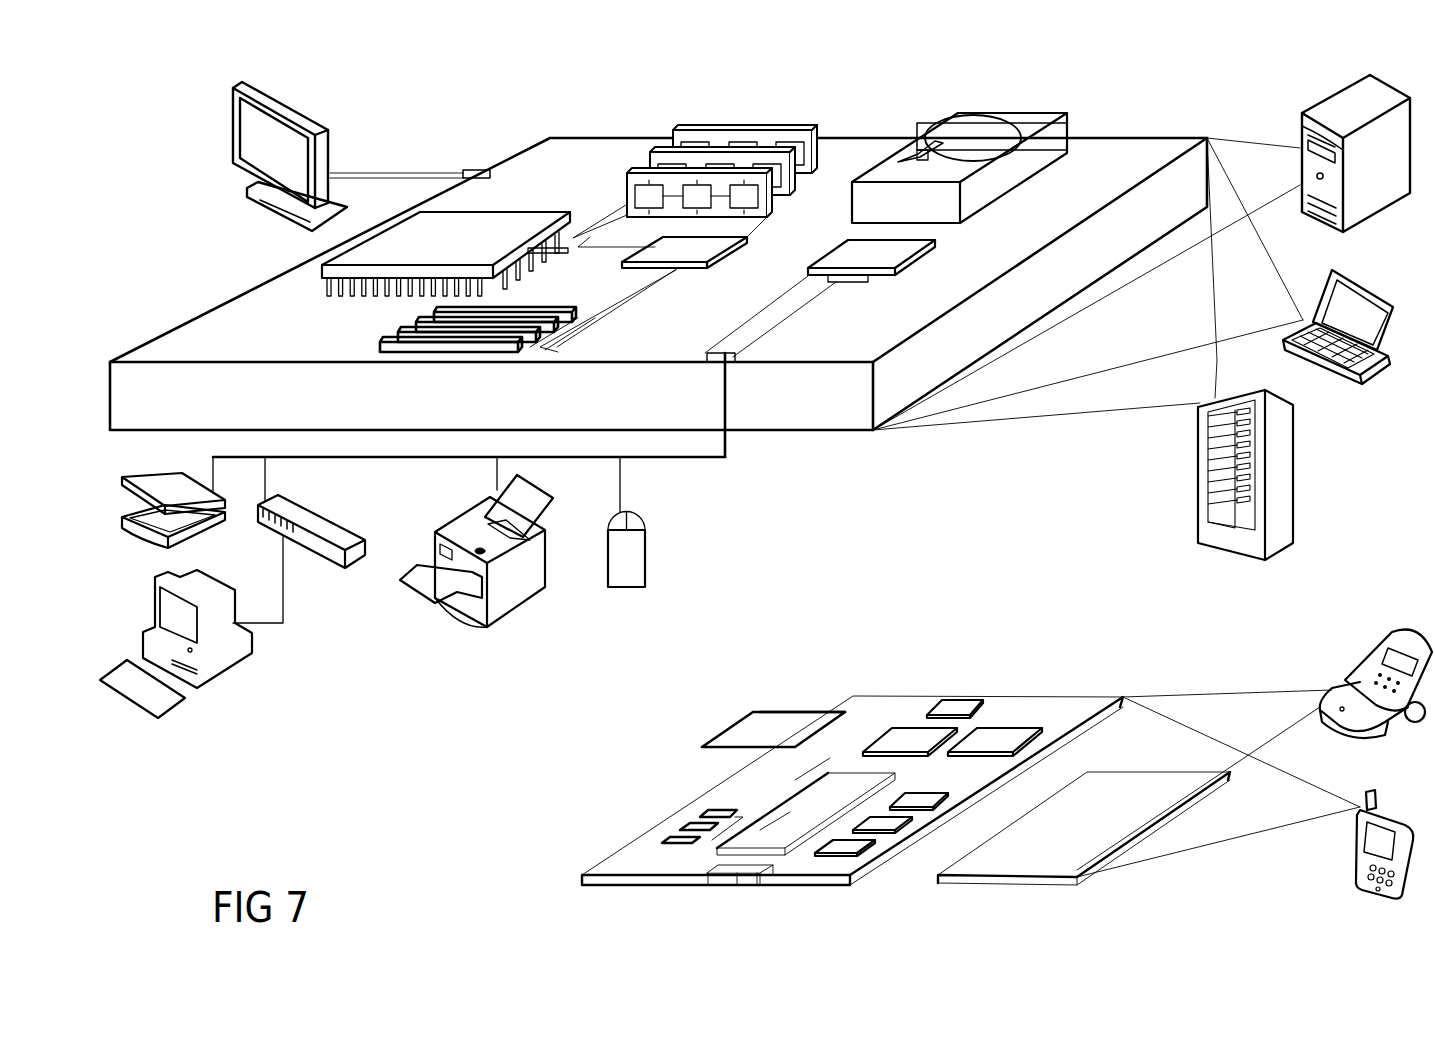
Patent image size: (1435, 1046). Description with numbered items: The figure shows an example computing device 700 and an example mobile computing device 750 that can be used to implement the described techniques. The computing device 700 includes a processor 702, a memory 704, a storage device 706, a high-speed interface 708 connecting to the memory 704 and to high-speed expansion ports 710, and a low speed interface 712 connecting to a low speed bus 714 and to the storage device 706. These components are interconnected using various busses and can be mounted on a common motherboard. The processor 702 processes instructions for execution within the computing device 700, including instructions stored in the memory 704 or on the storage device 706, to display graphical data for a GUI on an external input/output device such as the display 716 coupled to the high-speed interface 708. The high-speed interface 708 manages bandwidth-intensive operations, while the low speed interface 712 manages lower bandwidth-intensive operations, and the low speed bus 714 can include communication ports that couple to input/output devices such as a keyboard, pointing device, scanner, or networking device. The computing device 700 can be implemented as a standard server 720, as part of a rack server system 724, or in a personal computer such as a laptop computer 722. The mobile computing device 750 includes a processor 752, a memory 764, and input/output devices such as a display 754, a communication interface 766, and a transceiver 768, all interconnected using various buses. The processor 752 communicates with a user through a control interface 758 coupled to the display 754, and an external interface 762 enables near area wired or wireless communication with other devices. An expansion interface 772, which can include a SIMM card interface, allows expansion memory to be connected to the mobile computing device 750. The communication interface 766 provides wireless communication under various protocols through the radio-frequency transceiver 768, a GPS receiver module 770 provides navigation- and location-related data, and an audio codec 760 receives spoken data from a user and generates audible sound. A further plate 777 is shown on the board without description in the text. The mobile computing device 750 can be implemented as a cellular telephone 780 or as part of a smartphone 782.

The computing device 700 is at (461, 103).
The processor 702 is at (322, 273).
The memory 704 is at (693, 128).
The storage device 706 is at (950, 113).
The high-speed interface 708 is at (657, 250).
The high-speed expansion ports 710 is at (397, 323).
The low speed interface 712 is at (870, 253).
The low speed bus 714 is at (735, 363).
The display 716 is at (232, 90).
The standard server 720 is at (1298, 120).
The laptop computer 722 is at (1333, 270).
The rack server system 724 is at (1198, 503).
The mobile computing device 750 is at (827, 668).
The processor 752 is at (782, 852).
The display 754 is at (1078, 878).
The control interface 758 is at (895, 830).
The audio codec 760 is at (918, 805).
The external interface 762 is at (738, 876).
The memory 764 is at (680, 830).
The communication interface 766 is at (910, 738).
The transceiver 768 is at (995, 738).
The GPS receiver module 770 is at (962, 704).
The expansion interface 772 is at (823, 711).
The plate 777 is at (752, 712).
The cellular telephone 780 is at (1385, 632).
The smartphone 782 is at (1367, 785).